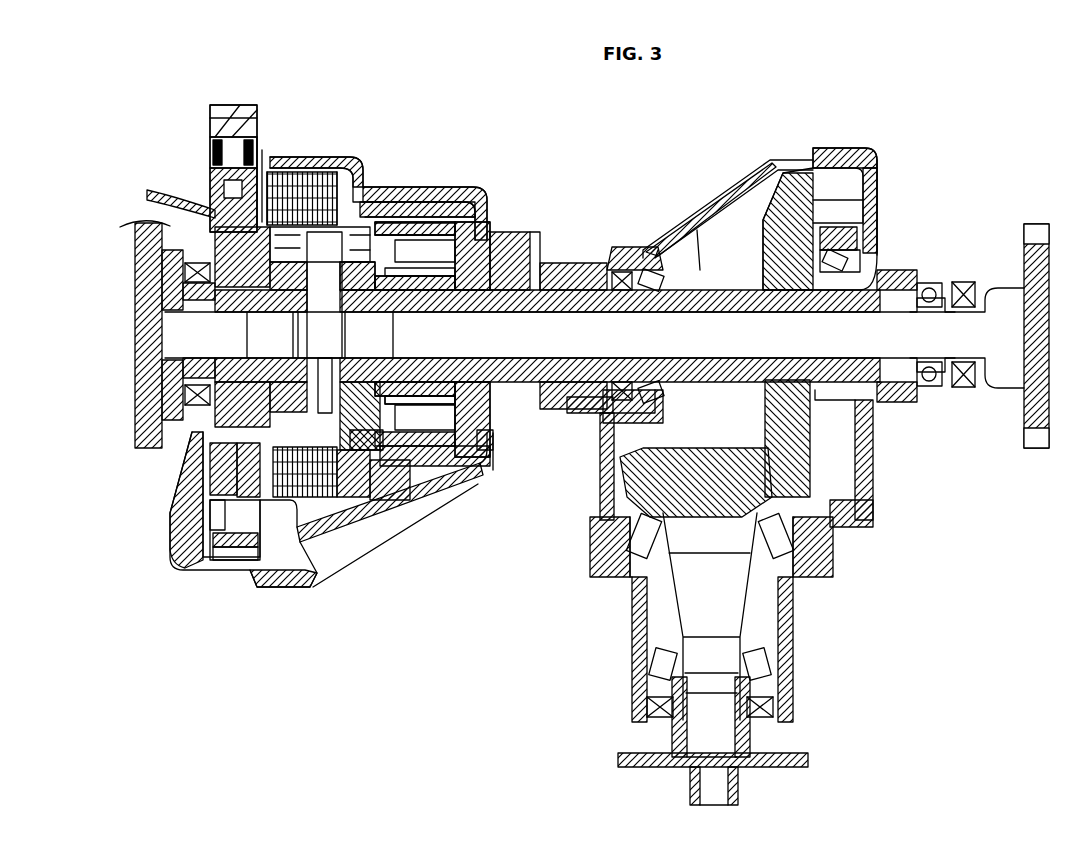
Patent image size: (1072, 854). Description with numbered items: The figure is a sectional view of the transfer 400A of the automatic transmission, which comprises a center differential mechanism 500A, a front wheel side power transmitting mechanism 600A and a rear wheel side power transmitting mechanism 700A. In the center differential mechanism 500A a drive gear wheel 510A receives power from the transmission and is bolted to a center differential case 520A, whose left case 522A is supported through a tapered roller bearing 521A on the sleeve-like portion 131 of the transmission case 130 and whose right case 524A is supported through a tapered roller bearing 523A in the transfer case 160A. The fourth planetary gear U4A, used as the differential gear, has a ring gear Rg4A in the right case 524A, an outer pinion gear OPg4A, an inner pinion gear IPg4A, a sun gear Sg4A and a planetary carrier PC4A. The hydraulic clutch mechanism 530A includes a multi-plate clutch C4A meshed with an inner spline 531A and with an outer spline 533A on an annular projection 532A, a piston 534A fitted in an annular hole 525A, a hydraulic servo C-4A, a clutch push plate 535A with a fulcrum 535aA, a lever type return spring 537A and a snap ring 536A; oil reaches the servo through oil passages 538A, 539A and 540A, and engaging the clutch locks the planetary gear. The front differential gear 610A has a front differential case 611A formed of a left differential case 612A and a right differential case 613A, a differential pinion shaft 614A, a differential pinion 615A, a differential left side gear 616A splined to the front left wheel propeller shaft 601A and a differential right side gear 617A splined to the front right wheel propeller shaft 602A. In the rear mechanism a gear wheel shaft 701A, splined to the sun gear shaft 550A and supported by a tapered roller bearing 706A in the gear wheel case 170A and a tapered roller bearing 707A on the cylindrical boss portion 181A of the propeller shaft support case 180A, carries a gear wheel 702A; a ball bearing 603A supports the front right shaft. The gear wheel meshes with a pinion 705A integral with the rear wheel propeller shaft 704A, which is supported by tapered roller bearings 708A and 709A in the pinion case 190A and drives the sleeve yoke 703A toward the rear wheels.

The front left wheel propeller shaft 601A is at (178, 319).
The ring gear Rg4A is at (470, 205).
The front right wheel propeller shaft 602A is at (858, 340).
The front wheel side power transmitting mechanism 600A is at (118, 351).
The differential left side gear 616A is at (205, 291).
The oil passage 538A is at (183, 257).
The oil passage 539A is at (148, 219).
The tapered roller bearing 521A is at (208, 373).
The left case 522A is at (210, 407).
The sleeve-like portion 131 is at (175, 438).
The transmission case 130 is at (262, 595).
The hydraulic clutch mechanism 530A is at (183, 520).
The front differential gear 610A is at (212, 558).
The hydraulic servo C-4A is at (212, 461).
The multi-plate clutch C4A is at (335, 172).
The left differential case 612A is at (312, 530).
The differential pinion shaft 614A is at (332, 490).
The right differential case 613A is at (337, 480).
The differential pinion 615A is at (360, 467).
The differential right side gear 617A is at (383, 465).
The inner pinion gear IPg4A is at (415, 440).
The planetary carrier PC4A is at (440, 462).
The sun gear shaft 550A is at (485, 443).
The outer pinion gear OPg4A is at (482, 200).
The fourth planetary gear U4A is at (486, 215).
The sun gear Sg4A is at (505, 228).
The tapered roller bearing 523A is at (512, 235).
The transfer case 160A is at (542, 236).
The clutch push plate 535A is at (345, 155).
The outer spline 533A is at (362, 187).
The annular projection 532A is at (375, 202).
The front differential case 611A is at (395, 215).
The right case 524A is at (410, 225).
The center differential case 520A is at (224, 105).
The drive gear wheel 510A is at (232, 105).
The piston 534A is at (212, 152).
The annular hole 525A is at (212, 187).
The oil passage 540A is at (147, 193).
The inner spline 531A is at (258, 140).
The snap ring 536A is at (262, 160).
The lever type return spring 537A is at (268, 175).
The fulcrum 535aA is at (345, 157).
The center differential mechanism 500A is at (200, 125).
The tapered roller bearing 706A is at (653, 243).
The gear wheel shaft 701A is at (693, 220).
The gear wheel case 170A is at (700, 270).
The rear wheel side power transmitting mechanism 700A is at (820, 172).
The transfer 400A is at (888, 140).
The gear wheel 702A is at (873, 180).
The propeller shaft support case 180A is at (857, 205).
The cylindrical boss portion 181A is at (853, 230).
The tapered roller bearing 707A is at (840, 262).
The ball bearing 603A is at (918, 285).
The pinion 705A is at (648, 460).
The tapered roller bearing 708A is at (787, 543).
The pinion case 190A is at (787, 596).
The rear wheel propeller shaft 704A is at (687, 597).
The tapered roller bearing 709A is at (752, 660).
The sleeve yoke 703A is at (767, 757).